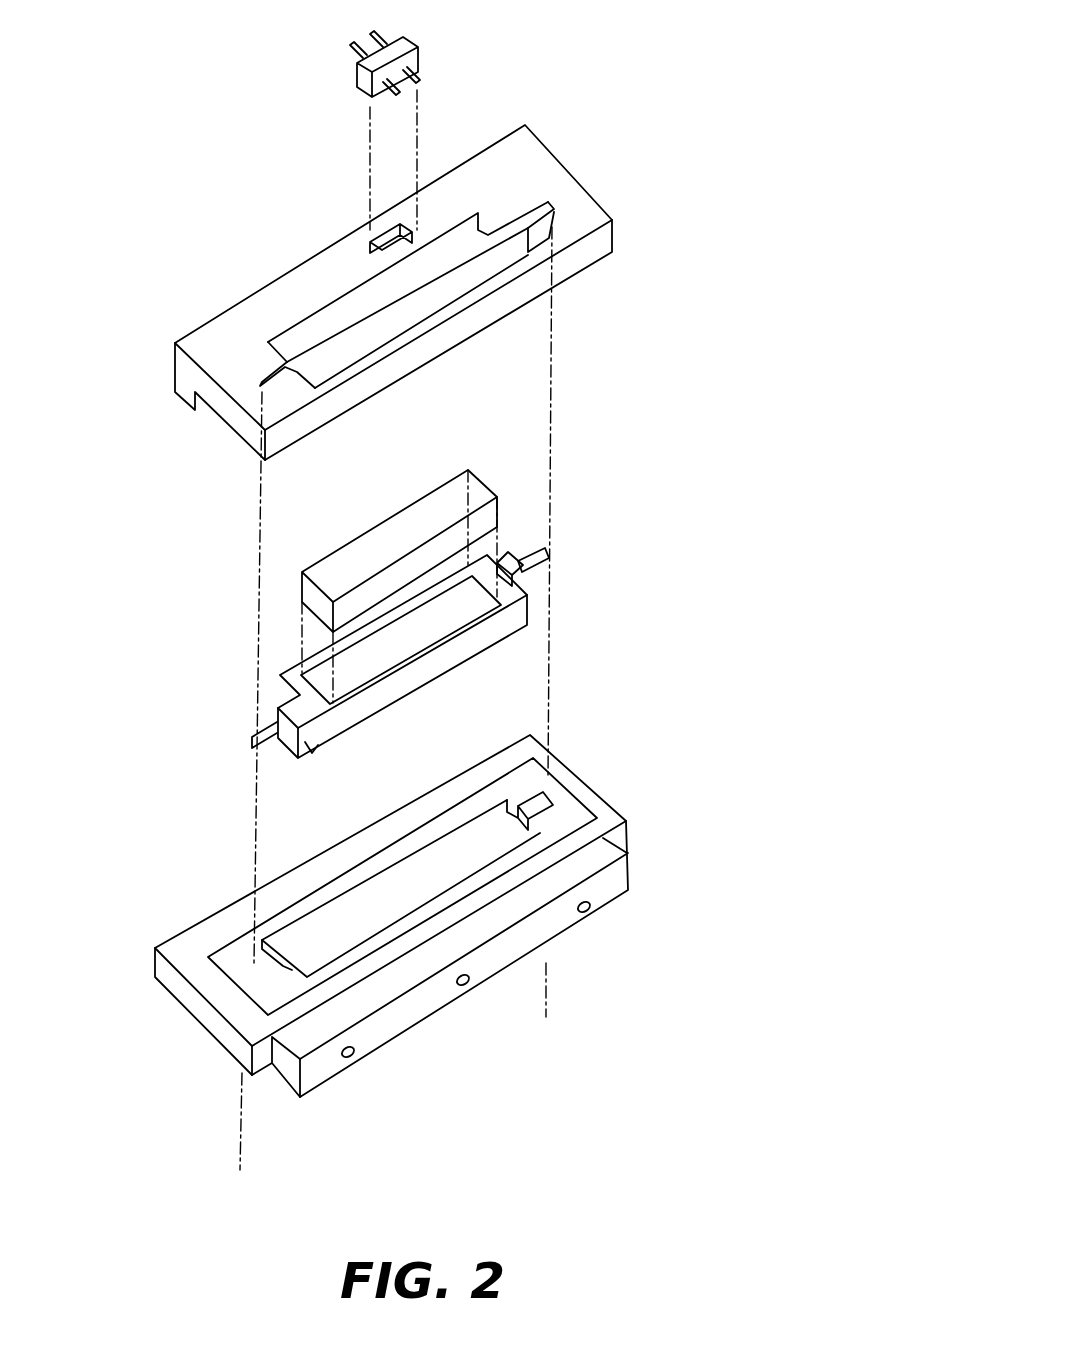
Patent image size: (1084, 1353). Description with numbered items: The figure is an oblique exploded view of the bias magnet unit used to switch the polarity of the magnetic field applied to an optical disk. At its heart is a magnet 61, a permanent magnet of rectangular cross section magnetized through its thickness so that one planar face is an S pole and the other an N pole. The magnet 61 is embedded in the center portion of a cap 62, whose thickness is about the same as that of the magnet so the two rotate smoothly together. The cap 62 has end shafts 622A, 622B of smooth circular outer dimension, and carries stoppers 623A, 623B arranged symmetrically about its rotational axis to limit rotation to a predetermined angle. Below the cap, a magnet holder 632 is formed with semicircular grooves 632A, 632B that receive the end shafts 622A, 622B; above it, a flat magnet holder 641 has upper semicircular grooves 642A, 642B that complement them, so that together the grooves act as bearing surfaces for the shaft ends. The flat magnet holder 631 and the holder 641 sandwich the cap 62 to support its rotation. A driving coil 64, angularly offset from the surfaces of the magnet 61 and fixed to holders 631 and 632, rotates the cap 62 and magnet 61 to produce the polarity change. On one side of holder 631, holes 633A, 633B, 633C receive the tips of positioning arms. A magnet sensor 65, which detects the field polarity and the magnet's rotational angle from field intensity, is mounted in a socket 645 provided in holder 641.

The magnet 61 is at (366, 556).
The cap 62 is at (406, 648).
The driving coil 64 is at (419, 923).
The magnet sensor 65 is at (408, 50).
The magnet holder 641 is at (451, 298).
The socket 645 is at (370, 246).
The upper semicircular groove 642A is at (556, 233).
The upper semicircular groove 642B is at (290, 397).
The end shaft 622A is at (533, 570).
The end shaft 622B is at (245, 750).
The stopper 623A is at (540, 558).
The stopper 623B is at (313, 745).
The magnet holder 631 is at (510, 960).
The magnet holder 632 is at (583, 812).
The semicircular groove 632A is at (535, 800).
The semicircular groove 632B is at (277, 978).
The hole 633A is at (468, 984).
The hole 633B is at (589, 911).
The hole 633C is at (353, 1056).